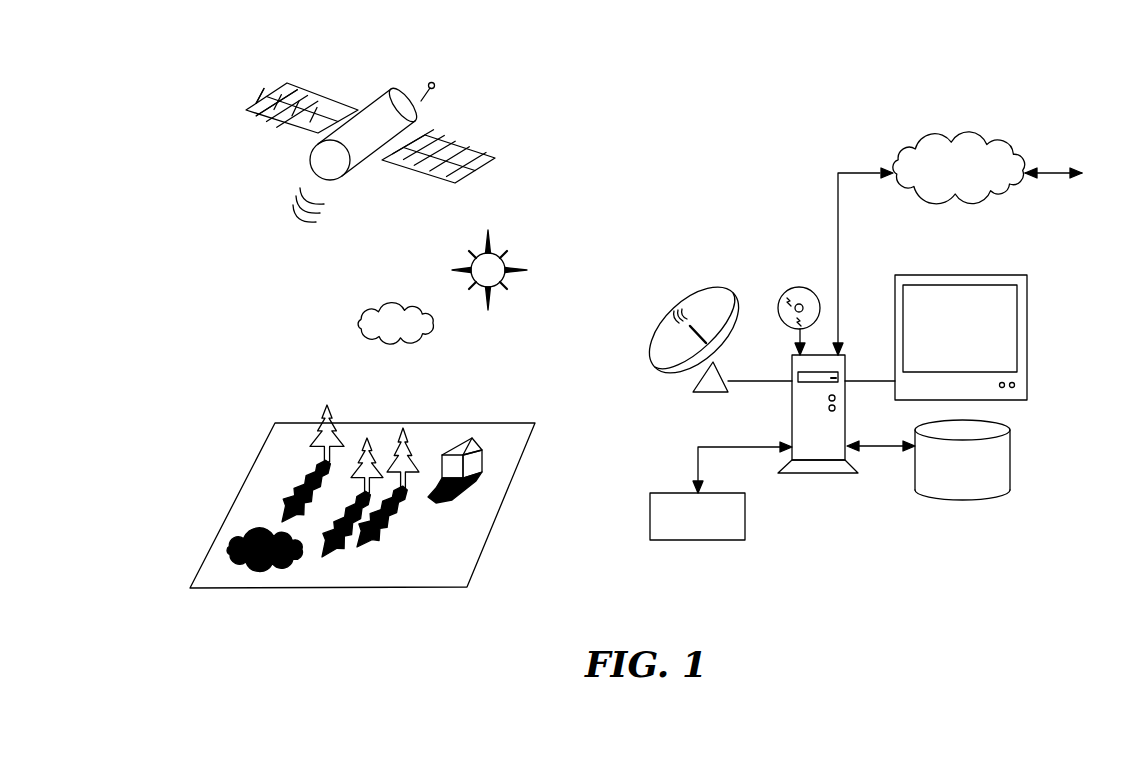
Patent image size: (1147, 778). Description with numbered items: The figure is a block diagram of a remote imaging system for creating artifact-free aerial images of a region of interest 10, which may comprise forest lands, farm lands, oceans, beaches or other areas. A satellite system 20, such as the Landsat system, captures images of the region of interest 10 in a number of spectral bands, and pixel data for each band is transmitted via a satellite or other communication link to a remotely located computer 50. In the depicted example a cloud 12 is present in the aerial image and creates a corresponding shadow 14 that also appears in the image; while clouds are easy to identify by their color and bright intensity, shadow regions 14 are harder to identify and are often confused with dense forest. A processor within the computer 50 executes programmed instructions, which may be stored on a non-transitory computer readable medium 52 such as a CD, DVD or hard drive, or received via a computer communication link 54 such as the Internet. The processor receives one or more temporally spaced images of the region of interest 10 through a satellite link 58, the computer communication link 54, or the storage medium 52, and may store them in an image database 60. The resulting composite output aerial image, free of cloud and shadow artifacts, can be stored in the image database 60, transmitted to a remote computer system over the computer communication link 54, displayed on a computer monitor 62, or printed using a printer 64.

The region of interest 10 is at (505, 500).
The cloud 12 is at (367, 317).
The shadow 14 is at (232, 541).
The satellite system 20 is at (425, 103).
The computer 50 is at (792, 413).
The disk / storage medium 52 is at (803, 287).
The computer communication link 54 is at (952, 142).
The satellite link 58 is at (724, 285).
The image database 60 is at (1012, 448).
The computer monitor 62 is at (1028, 332).
The printer 64 is at (745, 515).